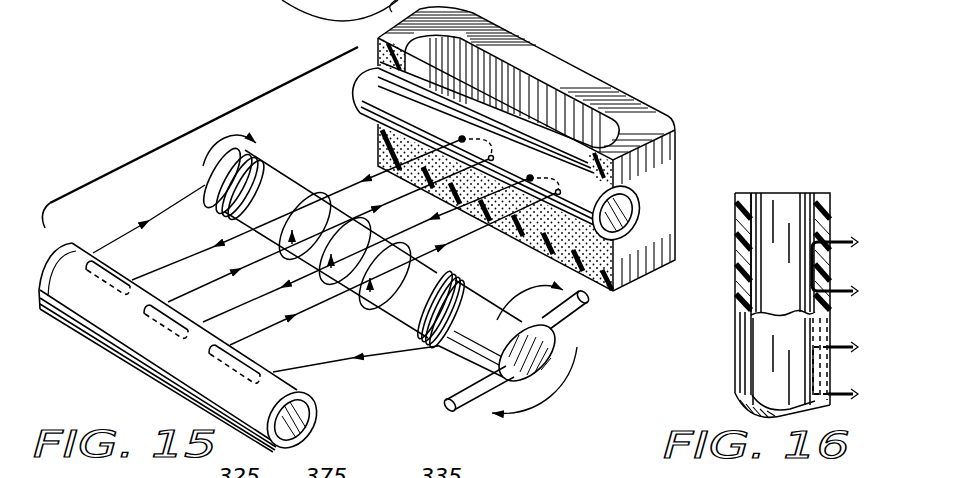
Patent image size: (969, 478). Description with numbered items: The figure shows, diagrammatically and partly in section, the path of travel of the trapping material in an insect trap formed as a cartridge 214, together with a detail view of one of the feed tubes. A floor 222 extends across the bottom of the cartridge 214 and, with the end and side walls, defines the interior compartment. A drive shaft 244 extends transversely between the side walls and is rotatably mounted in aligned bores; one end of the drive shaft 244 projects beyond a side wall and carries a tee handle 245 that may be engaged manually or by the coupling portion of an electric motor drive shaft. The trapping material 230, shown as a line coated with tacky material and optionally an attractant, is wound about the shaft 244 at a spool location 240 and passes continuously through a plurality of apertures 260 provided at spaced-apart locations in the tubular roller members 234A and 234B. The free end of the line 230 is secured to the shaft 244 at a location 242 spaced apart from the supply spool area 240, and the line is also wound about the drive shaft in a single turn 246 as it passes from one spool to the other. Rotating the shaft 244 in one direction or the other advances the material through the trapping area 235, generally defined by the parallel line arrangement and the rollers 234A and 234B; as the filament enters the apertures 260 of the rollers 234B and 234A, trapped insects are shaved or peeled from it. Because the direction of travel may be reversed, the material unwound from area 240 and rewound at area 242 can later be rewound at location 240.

In FIG. 15, the cartridge 214 is at (676, 158).
In FIG. 15, the floor 222 is at (546, 247).
In FIG. 15, the trapping material 230 is at (173, 203).
In FIG. 16, the trapping material 230 is at (849, 238).
In FIG. 15, the tubular roller member 234A is at (353, 95).
In FIG. 16, the tubular roller member 234A is at (776, 277).
In FIG. 15, the tubular roller member 234B is at (95, 256).
In FIG. 16, the tubular roller member 234B is at (767, 159).
In FIG. 15, the trapping area 235 is at (138, 158).
In FIG. 15, the spool location 240 is at (443, 284).
In FIG. 15, the free end location 242 is at (249, 161).
In FIG. 15, the drive shaft 244 is at (455, 372).
In FIG. 15, the tee handle 245 is at (578, 308).
In FIG. 15, the turn 246 is at (386, 316).
In FIG. 16, the apertures 260 is at (830, 240).